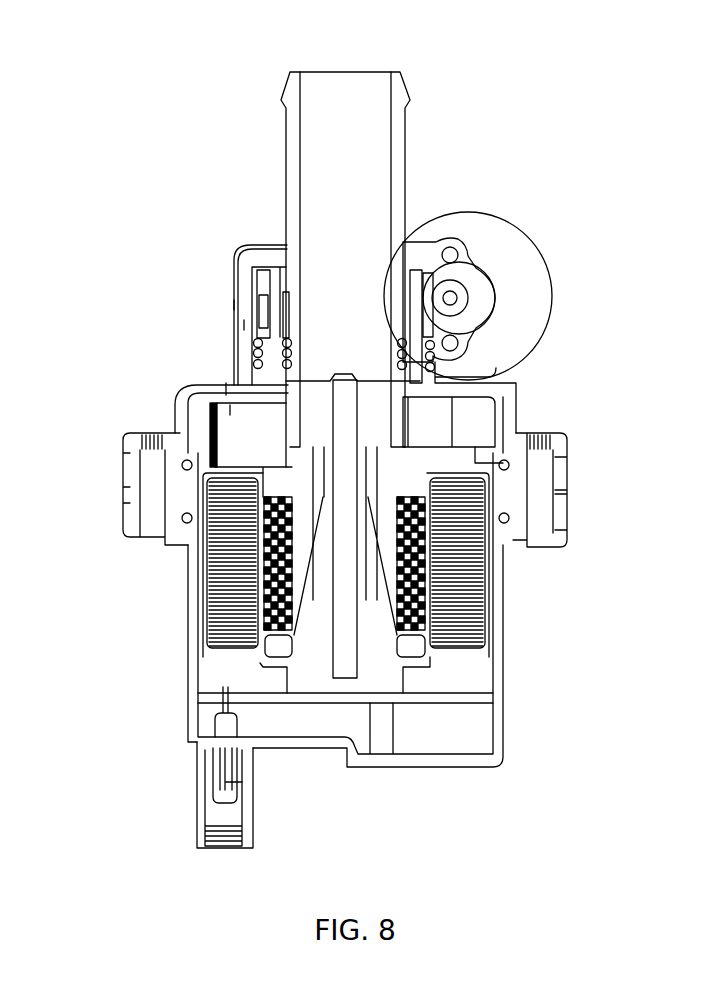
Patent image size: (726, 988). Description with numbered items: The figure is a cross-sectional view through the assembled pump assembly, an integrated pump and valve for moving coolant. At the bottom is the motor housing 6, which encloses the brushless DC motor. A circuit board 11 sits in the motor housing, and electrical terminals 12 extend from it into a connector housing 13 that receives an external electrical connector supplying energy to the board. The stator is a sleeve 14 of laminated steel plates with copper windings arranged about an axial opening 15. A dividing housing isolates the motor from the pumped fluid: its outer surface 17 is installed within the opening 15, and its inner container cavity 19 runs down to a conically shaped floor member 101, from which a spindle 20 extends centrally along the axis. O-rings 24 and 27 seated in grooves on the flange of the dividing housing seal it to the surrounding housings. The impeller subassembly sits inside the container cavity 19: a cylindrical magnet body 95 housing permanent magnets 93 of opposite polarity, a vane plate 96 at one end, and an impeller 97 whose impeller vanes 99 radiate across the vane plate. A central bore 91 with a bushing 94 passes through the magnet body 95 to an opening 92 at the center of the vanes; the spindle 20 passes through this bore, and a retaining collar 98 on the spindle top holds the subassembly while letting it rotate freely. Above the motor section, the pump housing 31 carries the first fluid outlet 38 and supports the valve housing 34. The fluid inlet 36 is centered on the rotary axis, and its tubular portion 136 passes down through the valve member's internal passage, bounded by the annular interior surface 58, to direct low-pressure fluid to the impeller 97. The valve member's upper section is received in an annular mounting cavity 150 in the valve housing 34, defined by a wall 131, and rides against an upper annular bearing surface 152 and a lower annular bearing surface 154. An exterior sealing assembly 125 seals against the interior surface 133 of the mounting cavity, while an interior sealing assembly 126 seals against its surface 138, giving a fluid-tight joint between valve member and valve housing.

The motor housing 6 is at (195, 695).
The circuit board 11 is at (458, 700).
The electrical terminals 12 is at (206, 768).
The connector housing 13 is at (197, 807).
The sleeve 14 is at (452, 660).
The opening 15 is at (436, 592).
The outer surface 17 is at (207, 593).
The container cavity 19 is at (220, 546).
The spindle 20 is at (355, 470).
The O-ring 24 is at (182, 462).
The O-ring 27 is at (183, 518).
The pump housing 31 is at (185, 408).
The valve housing 34 is at (242, 290).
The fluid inlet 36 is at (337, 72).
The first fluid outlet 38 is at (510, 295).
The annular interior surface 58 is at (400, 335).
The bore 91 is at (320, 460).
The opening 92 is at (505, 383).
The permanent magnets 93 is at (503, 540).
The bushing 94 is at (507, 460).
The magnet body 95 is at (432, 556).
The vane plate 96 is at (452, 458).
The impeller 97 is at (237, 418).
The retaining collar 98 is at (363, 380).
The impeller vanes 99 is at (228, 393).
The conically shaped floor member 101 is at (317, 640).
The exterior sealing assembly 125 is at (244, 325).
The interior sealing assembly 126 is at (323, 335).
The wall 131 is at (240, 296).
The interior surface 133 is at (437, 364).
The tubular portion 136 is at (365, 153).
The surface 138 is at (292, 350).
The annular mounting cavity 150 is at (256, 275).
The upper annular bearing surface 152 is at (284, 282).
The lower annular bearing surface 154 is at (447, 372).